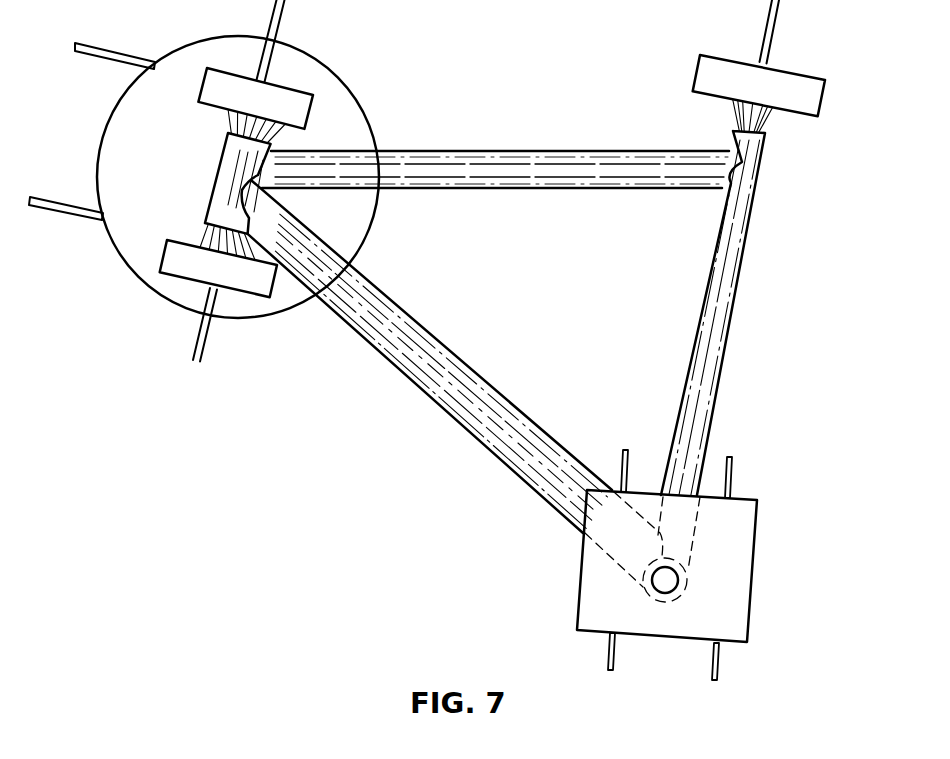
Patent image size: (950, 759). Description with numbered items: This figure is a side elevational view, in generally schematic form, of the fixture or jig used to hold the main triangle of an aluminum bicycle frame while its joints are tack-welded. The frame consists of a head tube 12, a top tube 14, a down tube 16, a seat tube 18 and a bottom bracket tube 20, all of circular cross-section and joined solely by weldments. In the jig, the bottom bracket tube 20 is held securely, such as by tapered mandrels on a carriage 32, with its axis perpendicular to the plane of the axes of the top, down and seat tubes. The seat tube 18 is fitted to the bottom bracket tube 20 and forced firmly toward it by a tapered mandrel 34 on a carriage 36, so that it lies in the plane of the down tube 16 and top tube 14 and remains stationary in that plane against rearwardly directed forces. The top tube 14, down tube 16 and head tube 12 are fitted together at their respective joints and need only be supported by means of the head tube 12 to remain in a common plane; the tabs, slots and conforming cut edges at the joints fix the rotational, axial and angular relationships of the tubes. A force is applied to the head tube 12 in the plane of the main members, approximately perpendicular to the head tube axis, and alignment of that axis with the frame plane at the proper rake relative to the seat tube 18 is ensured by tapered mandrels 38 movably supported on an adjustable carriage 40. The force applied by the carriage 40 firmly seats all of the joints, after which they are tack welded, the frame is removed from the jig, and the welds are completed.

The head tube 12 is at (213, 177).
The top tube 14 is at (506, 151).
The down tube 16 is at (427, 390).
The seat tube 18 is at (732, 333).
The bottom bracket tube 20 is at (688, 578).
The carriage 32 is at (758, 518).
The tapered mandrel 34 is at (772, 122).
The carriage 36 is at (823, 97).
The tapered mandrels 38 is at (307, 90).
The adjustable carriage 40 is at (153, 293).